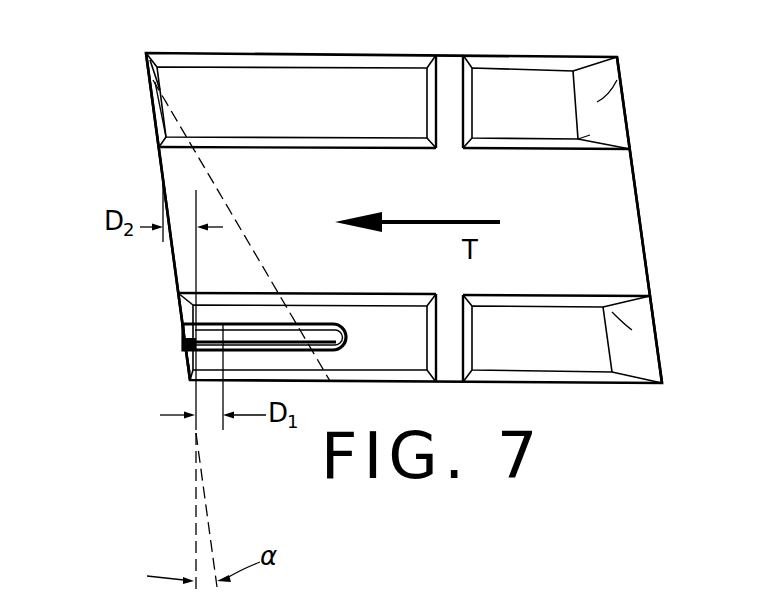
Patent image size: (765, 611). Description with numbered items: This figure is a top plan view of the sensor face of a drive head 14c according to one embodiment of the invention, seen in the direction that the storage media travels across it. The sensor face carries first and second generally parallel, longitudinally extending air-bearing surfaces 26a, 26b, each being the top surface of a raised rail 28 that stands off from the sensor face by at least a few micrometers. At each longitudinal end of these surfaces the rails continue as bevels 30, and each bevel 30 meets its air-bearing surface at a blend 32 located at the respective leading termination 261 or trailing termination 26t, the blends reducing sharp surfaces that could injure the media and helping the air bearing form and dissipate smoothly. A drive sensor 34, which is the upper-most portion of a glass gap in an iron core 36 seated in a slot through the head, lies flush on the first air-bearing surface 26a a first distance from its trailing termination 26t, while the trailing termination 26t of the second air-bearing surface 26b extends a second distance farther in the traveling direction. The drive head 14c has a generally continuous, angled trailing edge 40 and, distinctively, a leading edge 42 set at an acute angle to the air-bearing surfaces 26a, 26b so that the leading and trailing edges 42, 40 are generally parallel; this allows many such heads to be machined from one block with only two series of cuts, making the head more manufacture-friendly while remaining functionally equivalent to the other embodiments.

The drive head 14c is at (550, 278).
The second air-bearing surface 26b is at (328, 112).
The first air-bearing surface 26a is at (364, 351).
The raised rail 28 is at (535, 112).
The bevel 30 is at (153, 107).
The blend 32 is at (155, 85).
The leading termination 261 is at (580, 128).
The trailing termination 26t is at (158, 83).
The drive sensor 34 is at (233, 327).
The iron core 36 is at (318, 330).
The trailing edge 40 is at (158, 163).
The leading edge 42 is at (633, 175).